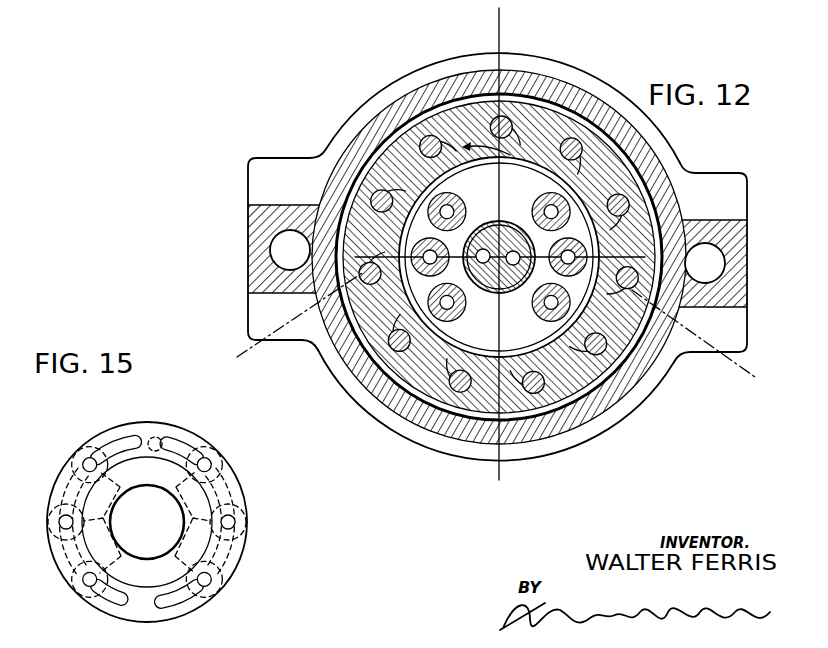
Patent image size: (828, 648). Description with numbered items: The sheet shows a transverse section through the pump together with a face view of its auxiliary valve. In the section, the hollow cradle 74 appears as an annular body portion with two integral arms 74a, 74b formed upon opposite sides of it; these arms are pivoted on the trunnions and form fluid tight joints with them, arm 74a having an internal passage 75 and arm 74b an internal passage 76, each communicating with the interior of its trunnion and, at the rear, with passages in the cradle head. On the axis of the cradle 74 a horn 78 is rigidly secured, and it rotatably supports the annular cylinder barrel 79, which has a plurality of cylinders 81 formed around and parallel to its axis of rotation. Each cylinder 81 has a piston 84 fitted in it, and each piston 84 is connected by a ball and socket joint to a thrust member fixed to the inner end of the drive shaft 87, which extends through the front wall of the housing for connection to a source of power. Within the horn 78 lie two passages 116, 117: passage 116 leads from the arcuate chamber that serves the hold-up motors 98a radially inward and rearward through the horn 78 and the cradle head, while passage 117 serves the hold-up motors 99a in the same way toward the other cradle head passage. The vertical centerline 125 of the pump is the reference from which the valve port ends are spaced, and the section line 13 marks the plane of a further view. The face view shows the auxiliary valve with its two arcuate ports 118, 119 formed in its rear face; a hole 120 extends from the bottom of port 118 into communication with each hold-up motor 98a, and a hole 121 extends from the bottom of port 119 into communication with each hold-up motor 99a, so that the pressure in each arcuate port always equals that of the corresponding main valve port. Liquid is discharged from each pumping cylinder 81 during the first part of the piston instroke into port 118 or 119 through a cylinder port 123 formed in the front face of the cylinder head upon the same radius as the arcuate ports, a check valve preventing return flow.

In FIG. 12, the section line 13 is at (249, 359).
In FIG. 12, the hollow cradle 74 is at (477, 437).
In FIG. 12, the arm 74a is at (262, 226).
In FIG. 12, the arm 74b is at (733, 229).
In FIG. 12, the internal passage 75 is at (283, 259).
In FIG. 12, the internal passage 76 is at (698, 272).
In FIG. 12, the horn 78 is at (492, 291).
In FIG. 12, the annular cylinder barrel 79 is at (393, 413).
In FIG. 12, the cylinder 81 is at (490, 126).
In FIG. 12, the piston 84 is at (563, 141).
In FIG. 12, the drive shaft 87 is at (259, 16).
In FIG. 12, the hold-up motor 98a is at (458, 199).
In FIG. 15, the hold-up motor 98a is at (186, 519).
In FIG. 12, the hold-up motor 99a is at (540, 199).
In FIG. 15, the hold-up motor 99a is at (108, 518).
In FIG. 12, the passage 116 is at (483, 248).
In FIG. 12, the passage 117 is at (512, 267).
In FIG. 15, the arcuate port 118 is at (178, 606).
In FIG. 15, the arcuate port 119 is at (112, 601).
In FIG. 15, the hole 120 is at (213, 468).
In FIG. 15, the hole 121 is at (81, 464).
In FIG. 15, the cylinder port 123 is at (151, 428).
In FIG. 12, the vertical centerline 125 is at (496, 16).